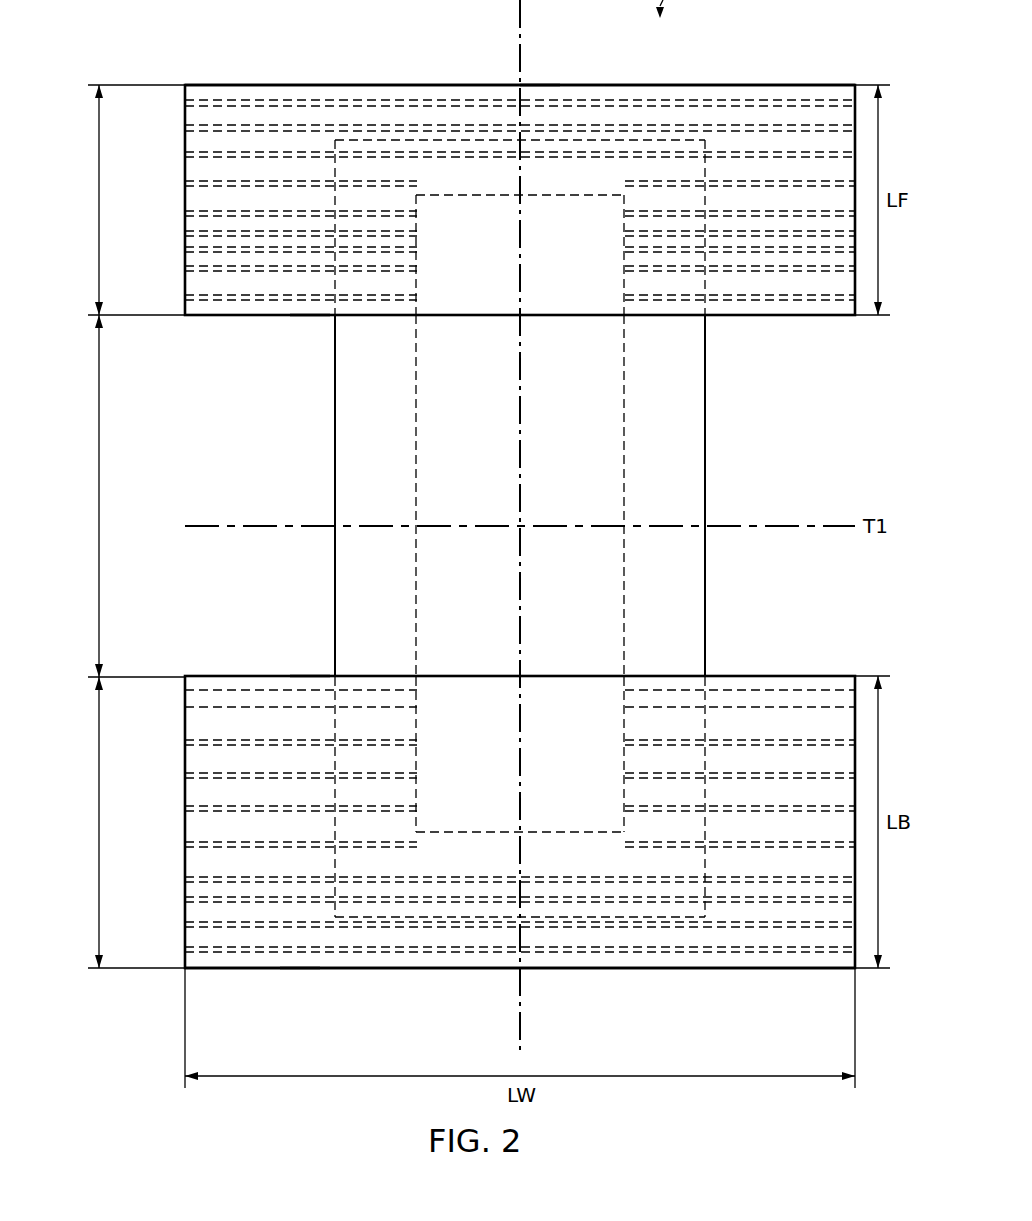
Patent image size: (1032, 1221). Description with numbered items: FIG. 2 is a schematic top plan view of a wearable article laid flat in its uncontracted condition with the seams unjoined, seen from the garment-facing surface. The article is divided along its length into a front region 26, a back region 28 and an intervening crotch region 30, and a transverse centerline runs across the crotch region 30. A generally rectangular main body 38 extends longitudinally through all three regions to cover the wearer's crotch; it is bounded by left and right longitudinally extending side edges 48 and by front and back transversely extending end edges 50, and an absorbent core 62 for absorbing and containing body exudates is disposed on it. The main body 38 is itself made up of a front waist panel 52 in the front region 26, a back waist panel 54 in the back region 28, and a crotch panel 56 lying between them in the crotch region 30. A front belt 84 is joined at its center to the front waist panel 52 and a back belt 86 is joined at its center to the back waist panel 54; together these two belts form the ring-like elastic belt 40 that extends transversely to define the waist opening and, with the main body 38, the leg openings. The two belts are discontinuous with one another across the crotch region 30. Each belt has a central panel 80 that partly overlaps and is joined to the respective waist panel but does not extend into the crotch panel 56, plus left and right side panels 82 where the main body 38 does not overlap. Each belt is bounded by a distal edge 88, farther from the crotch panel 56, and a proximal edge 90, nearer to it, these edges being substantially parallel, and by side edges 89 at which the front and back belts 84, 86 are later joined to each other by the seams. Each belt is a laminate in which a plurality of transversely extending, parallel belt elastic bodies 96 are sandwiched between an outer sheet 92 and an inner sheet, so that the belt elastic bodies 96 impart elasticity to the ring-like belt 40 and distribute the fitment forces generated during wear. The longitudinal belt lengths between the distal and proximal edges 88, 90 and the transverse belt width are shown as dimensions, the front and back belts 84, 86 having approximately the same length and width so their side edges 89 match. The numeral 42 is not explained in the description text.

The front region 26 is at (99, 200).
The back region 28 is at (99, 842).
The crotch region 30 is at (99, 495).
The main body 38 is at (718, 482).
The ring-like elastic belt 40 is at (740, 992).
The longitudinal side edge 42 is at (696, 583).
The side edges 48 is at (335, 422).
The end edges 50 is at (420, 138).
The front waist panel 52 is at (484, 268).
The back waist panel 54 is at (484, 770).
The crotch panel 56 is at (322, 497).
The absorbent core 62 is at (416, 452).
The central panel 80 is at (487, 110).
The side panels 82 is at (248, 287).
The front belt 84 is at (790, 85).
The back belt 86 is at (222, 968).
The distal edge 88 is at (554, 85).
The side edges 89 is at (185, 168).
The proximal edge 90 is at (314, 316).
The outer sheet 92 is at (228, 84).
The belt elastic bodies 96 is at (205, 130).